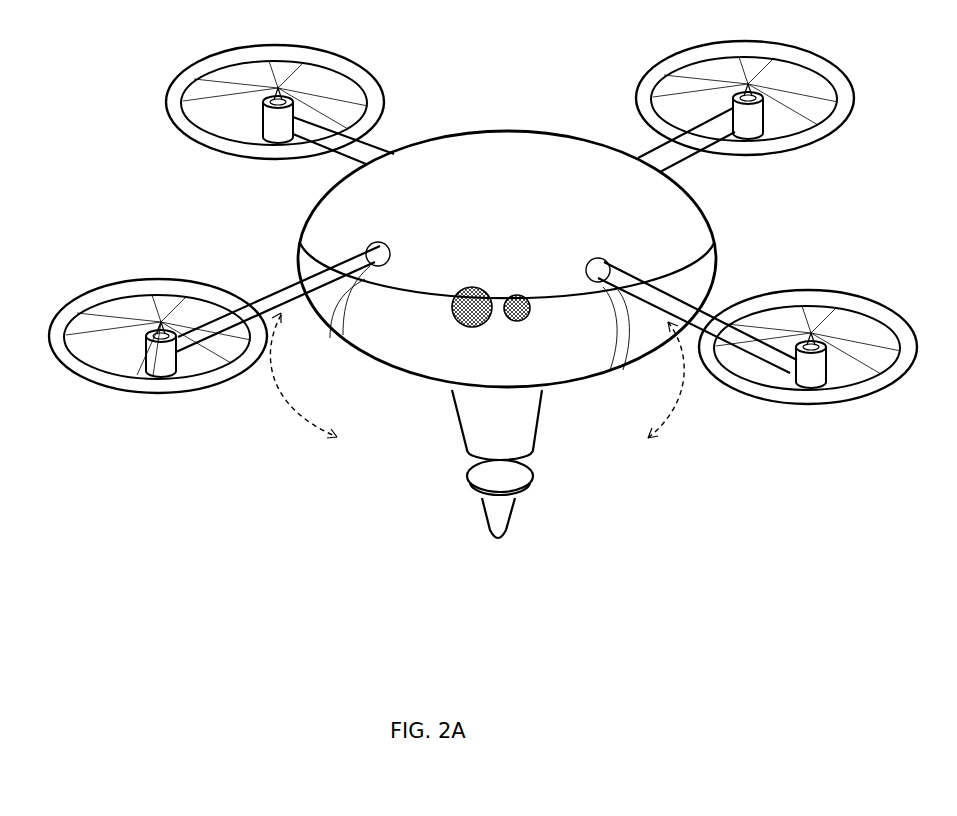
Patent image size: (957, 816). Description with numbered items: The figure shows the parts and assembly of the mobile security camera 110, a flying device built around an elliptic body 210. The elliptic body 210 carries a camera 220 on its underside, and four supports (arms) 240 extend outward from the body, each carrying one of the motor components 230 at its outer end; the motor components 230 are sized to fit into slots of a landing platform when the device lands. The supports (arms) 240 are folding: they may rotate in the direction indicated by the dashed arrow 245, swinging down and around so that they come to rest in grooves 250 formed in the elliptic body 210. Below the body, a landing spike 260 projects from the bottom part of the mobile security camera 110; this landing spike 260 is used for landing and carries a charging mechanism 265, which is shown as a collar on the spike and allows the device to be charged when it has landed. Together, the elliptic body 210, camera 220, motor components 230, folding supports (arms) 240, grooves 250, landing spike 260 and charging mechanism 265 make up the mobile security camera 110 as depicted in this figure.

The mobile security camera 110 is at (560, 133).
The elliptic body 210 is at (434, 222).
The camera 220 is at (457, 325).
The motor components 230 is at (838, 300).
The supports (arms) 240 is at (273, 287).
The dashed arrow 245 is at (287, 403).
The grooves 250 is at (622, 362).
The landing spike 260 is at (493, 515).
The charging mechanism 265 is at (470, 485).